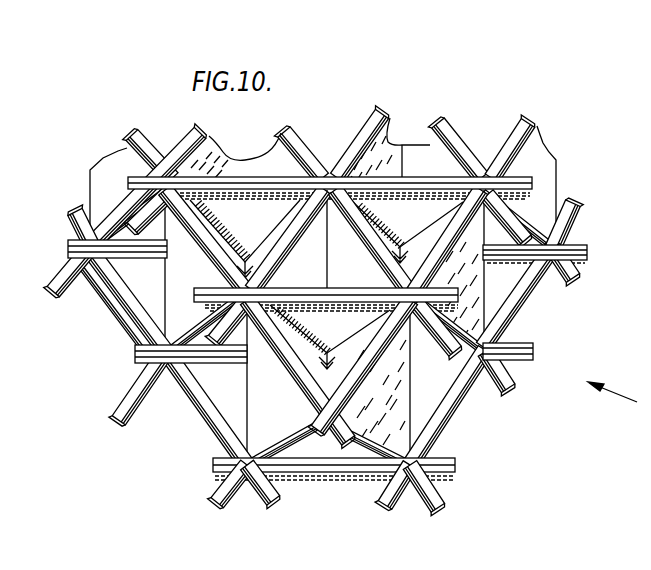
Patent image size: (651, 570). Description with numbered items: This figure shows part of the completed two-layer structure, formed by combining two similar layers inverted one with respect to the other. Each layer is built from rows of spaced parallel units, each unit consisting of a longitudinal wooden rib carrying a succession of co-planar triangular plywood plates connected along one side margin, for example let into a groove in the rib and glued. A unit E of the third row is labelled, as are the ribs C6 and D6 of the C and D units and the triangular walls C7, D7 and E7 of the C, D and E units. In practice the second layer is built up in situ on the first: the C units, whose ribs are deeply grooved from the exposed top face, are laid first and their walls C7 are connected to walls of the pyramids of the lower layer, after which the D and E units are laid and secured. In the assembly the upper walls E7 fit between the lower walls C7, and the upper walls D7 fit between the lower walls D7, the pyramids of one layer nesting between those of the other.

The unit E is at (196, 293).
The wall E7 is at (353, 325).
The rib C6 is at (297, 357).
The wall C7 is at (250, 410).
The rib D6 is at (313, 424).
The wall D7 is at (380, 400).